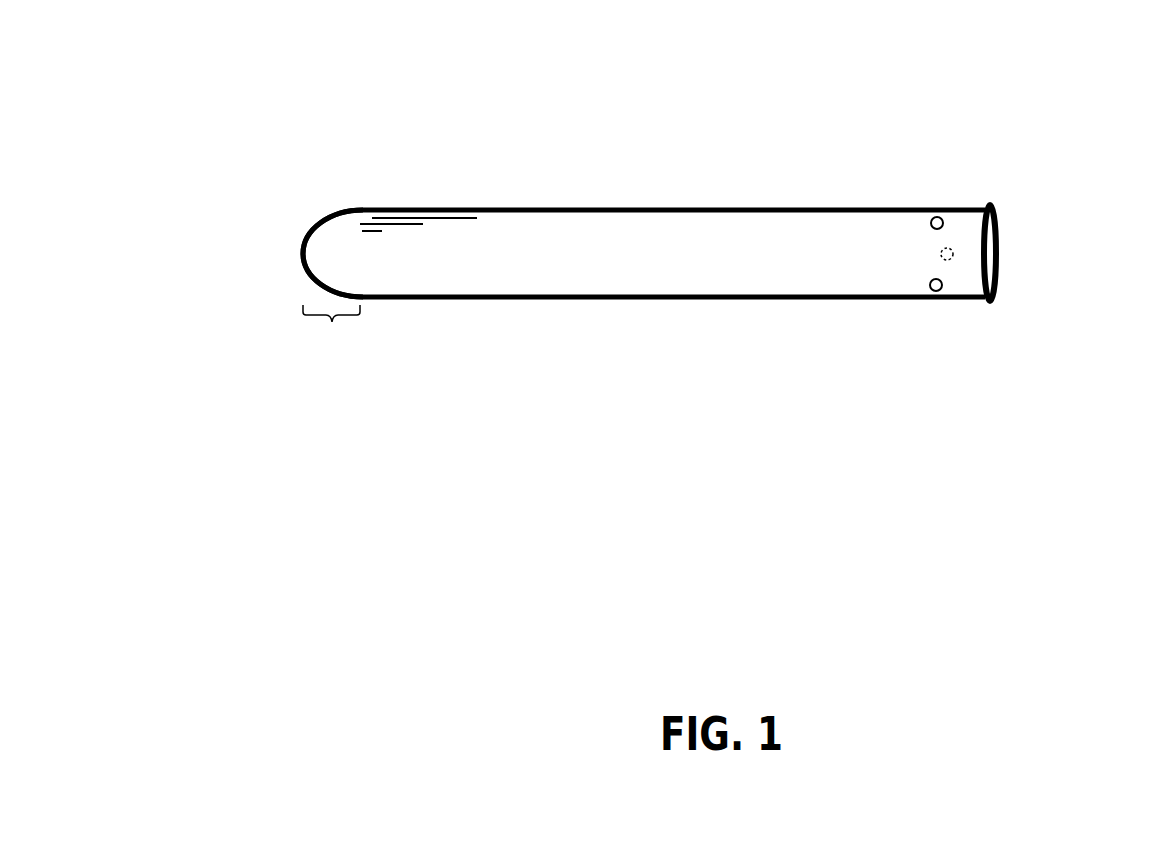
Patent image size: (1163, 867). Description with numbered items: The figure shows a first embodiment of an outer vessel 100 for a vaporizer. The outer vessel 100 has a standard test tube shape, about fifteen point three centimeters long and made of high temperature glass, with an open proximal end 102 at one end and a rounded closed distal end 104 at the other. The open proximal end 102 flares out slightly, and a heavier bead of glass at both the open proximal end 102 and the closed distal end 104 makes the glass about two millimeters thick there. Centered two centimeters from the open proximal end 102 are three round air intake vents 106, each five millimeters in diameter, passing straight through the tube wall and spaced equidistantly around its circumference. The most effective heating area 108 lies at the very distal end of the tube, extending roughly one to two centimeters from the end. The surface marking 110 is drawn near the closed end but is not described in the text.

The outer vessel 100 is at (618, 375).
The open proximal end 102 is at (996, 250).
The rounded closed distal end 104 is at (305, 262).
The air intake vents 106 is at (949, 248).
The most effective heating area 108 is at (331, 330).
The shading / surface marking 110 is at (313, 252).